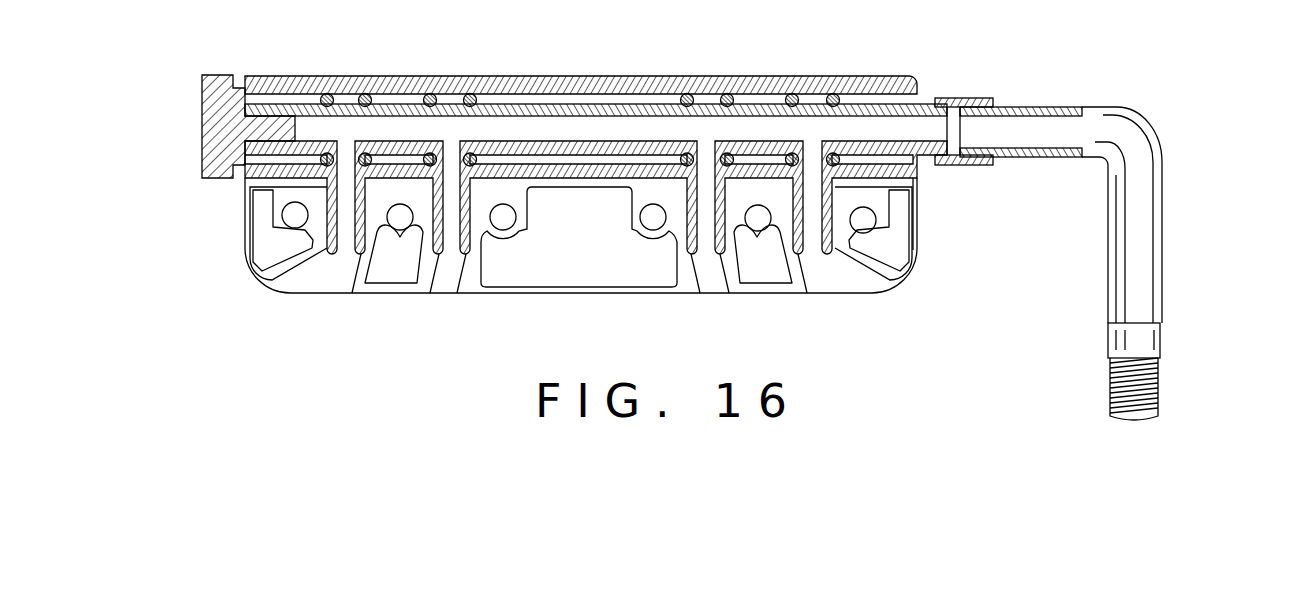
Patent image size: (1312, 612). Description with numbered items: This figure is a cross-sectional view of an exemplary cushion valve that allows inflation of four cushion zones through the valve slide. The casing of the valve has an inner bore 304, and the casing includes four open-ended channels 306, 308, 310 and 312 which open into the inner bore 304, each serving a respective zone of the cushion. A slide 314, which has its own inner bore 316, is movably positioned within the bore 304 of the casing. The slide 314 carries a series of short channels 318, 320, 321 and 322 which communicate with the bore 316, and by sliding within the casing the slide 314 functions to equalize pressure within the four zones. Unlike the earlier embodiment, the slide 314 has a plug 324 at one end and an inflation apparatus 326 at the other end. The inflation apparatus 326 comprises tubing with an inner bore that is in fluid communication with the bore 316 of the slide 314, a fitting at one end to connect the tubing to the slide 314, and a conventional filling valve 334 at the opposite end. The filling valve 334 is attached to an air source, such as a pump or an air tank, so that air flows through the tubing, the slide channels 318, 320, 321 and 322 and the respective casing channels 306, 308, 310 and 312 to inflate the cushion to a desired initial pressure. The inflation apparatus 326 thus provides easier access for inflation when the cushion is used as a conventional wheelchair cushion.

The inner bore 304 is at (393, 78).
The open-ended channel 306 is at (345, 243).
The open-ended channel 308 is at (453, 238).
The open-ended channel 310 is at (705, 242).
The open-ended channel 312 is at (812, 245).
The slide 314 is at (254, 93).
The inner bore of slide 316 is at (580, 130).
The short channel 318 is at (348, 150).
The short channel 320 is at (458, 80).
The short channel 321 is at (708, 143).
The short channel 322 is at (813, 148).
The plug 324 is at (202, 118).
The inflation apparatus 326 is at (1043, 101).
The filling valve 334 is at (1160, 403).